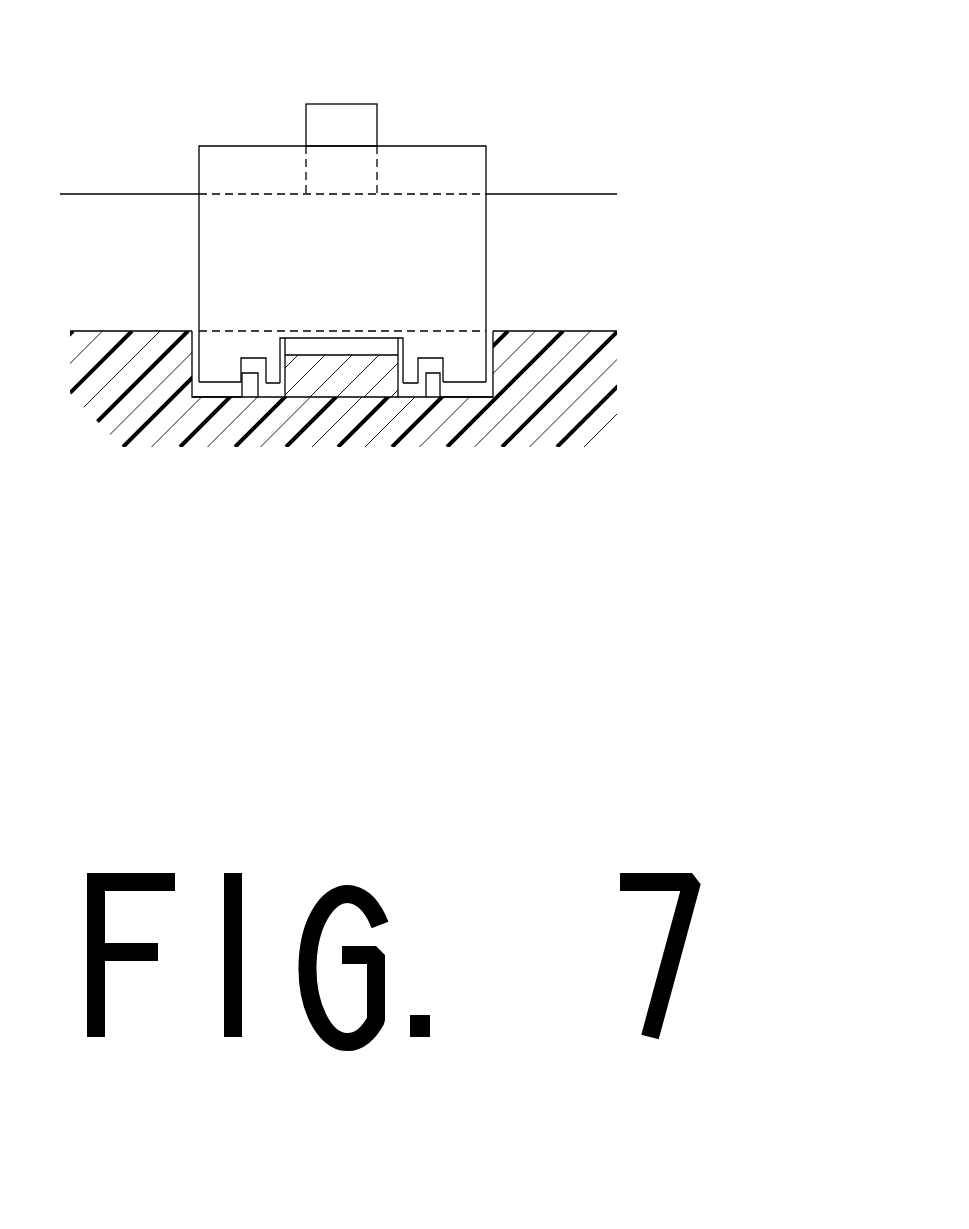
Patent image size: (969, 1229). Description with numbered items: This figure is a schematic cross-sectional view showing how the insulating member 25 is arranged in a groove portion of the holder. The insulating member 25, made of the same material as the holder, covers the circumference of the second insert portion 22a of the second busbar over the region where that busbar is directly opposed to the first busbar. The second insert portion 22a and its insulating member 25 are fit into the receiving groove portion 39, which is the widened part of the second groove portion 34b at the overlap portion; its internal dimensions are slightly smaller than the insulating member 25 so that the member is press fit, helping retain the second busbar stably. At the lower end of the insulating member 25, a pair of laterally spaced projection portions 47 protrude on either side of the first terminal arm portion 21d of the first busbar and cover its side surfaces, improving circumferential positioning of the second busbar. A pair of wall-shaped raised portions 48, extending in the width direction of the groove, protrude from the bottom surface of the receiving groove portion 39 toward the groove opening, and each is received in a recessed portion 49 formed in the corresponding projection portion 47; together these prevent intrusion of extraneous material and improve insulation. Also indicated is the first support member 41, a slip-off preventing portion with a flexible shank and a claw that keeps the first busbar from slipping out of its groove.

The second insert portion 22a is at (563, 194).
The first support member 41 is at (337, 103).
The insulating member 25 is at (432, 146).
The recessed portion 49 is at (248, 363).
The first terminal arm portion 21d is at (332, 376).
The receiving groove portion 39 is at (193, 364).
The projection portions 47 is at (214, 390).
The raised portions 48 is at (245, 388).
The second groove portion 34b is at (493, 375).